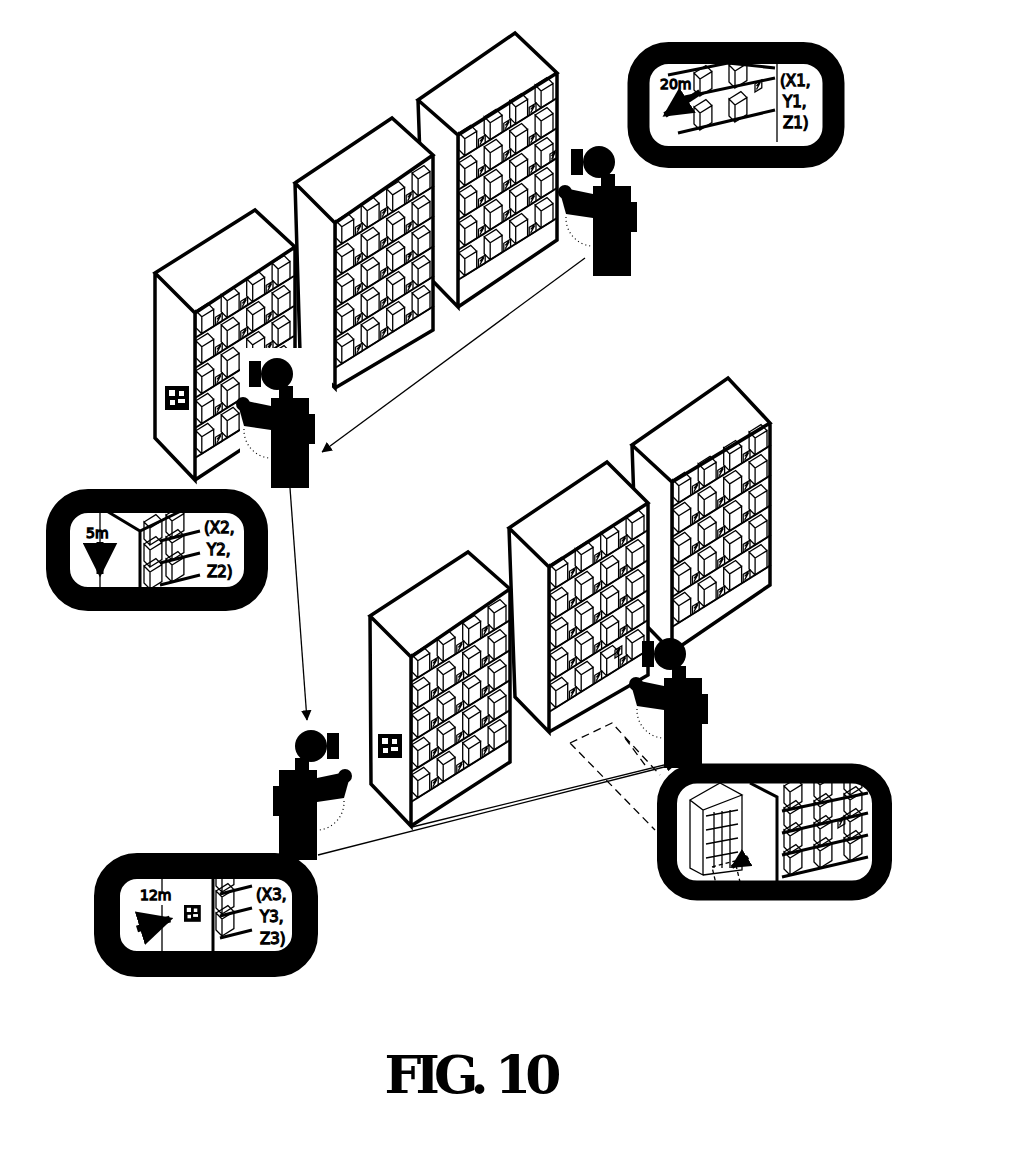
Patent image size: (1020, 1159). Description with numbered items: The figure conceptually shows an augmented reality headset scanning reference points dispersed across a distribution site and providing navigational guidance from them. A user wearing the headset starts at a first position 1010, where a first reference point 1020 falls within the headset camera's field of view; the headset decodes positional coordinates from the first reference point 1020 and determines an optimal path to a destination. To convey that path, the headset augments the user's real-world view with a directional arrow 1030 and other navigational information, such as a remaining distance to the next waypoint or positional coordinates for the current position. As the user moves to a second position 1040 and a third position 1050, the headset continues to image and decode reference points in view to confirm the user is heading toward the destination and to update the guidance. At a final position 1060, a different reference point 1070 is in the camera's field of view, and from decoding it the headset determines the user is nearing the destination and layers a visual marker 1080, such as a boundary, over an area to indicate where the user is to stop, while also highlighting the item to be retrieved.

The first position 1010 is at (640, 285).
The first reference point 1020 is at (556, 154).
The directional arrow 1030 is at (674, 118).
The second position 1040 is at (312, 496).
The third position 1050 is at (326, 863).
The final position 1060 is at (701, 745).
The reference point 1070 is at (624, 646).
The visual marker 1080 is at (735, 880).